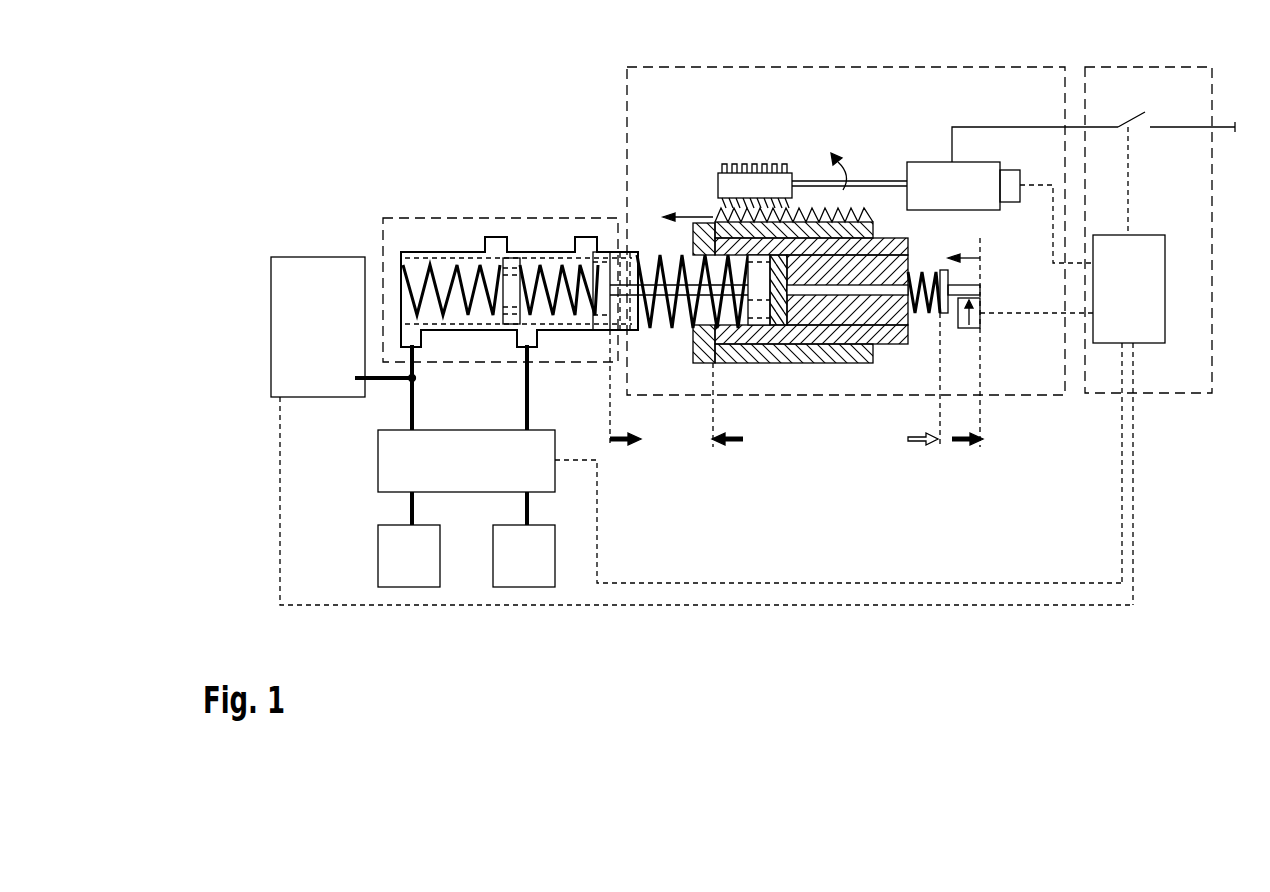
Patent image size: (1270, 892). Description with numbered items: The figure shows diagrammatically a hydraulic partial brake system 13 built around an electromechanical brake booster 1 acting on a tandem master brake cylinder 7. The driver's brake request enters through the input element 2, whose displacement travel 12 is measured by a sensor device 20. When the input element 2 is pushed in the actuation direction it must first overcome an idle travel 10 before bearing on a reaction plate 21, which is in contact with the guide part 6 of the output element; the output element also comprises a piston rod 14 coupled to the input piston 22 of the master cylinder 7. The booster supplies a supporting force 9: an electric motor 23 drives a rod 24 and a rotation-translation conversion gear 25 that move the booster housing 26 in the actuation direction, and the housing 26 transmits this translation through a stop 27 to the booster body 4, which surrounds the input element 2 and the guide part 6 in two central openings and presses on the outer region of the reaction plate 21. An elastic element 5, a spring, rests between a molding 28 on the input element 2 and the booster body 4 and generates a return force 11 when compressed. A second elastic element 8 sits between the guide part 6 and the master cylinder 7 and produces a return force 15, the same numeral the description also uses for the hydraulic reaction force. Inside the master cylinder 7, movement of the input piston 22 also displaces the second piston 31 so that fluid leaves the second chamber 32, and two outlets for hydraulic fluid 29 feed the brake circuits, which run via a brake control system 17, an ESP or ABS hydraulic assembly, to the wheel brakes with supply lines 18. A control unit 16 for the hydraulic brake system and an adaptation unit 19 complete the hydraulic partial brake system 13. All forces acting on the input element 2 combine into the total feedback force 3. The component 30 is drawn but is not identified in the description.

The brake booster 1 is at (998, 63).
The input element 2 is at (978, 290).
The total feedback force F_ped 3 is at (963, 445).
The booster body 4 is at (883, 335).
The elastic element 5 is at (925, 272).
The guide part 6 is at (758, 320).
The tandem master brake cylinder 7 is at (393, 218).
The second elastic element 8 is at (657, 253).
The supporting force F_sup 9 is at (728, 445).
The idle travel 10 is at (789, 290).
The return force of first spring 11 is at (920, 445).
The displacement travel 12 is at (980, 258).
The hydraulic partial brake system 13 is at (455, 630).
The piston rod 14 is at (667, 330).
The return force of second spring / hydraulic reaction force 15 is at (620, 445).
The control unit for the hydraulic brake system 16 is at (1202, 394).
The brake control system 17 is at (378, 468).
The wheel brake including supply line 18 is at (410, 587).
The adaptation unit 19 is at (297, 257).
The sensor device 20 is at (980, 320).
The reaction plate 21 is at (785, 318).
The input piston 22 is at (600, 252).
The electric motor 23 is at (930, 162).
The rod 24 is at (870, 181).
The rotation-translation conversion gear 25 is at (708, 160).
The booster housing 26 is at (843, 363).
The stop 27 is at (697, 358).
The molding 28 is at (944, 315).
The outlets for hydraulic fluid 29 is at (418, 345).
The second spring 30 is at (553, 262).
The second piston 31 is at (515, 258).
The second chamber 32 is at (440, 260).